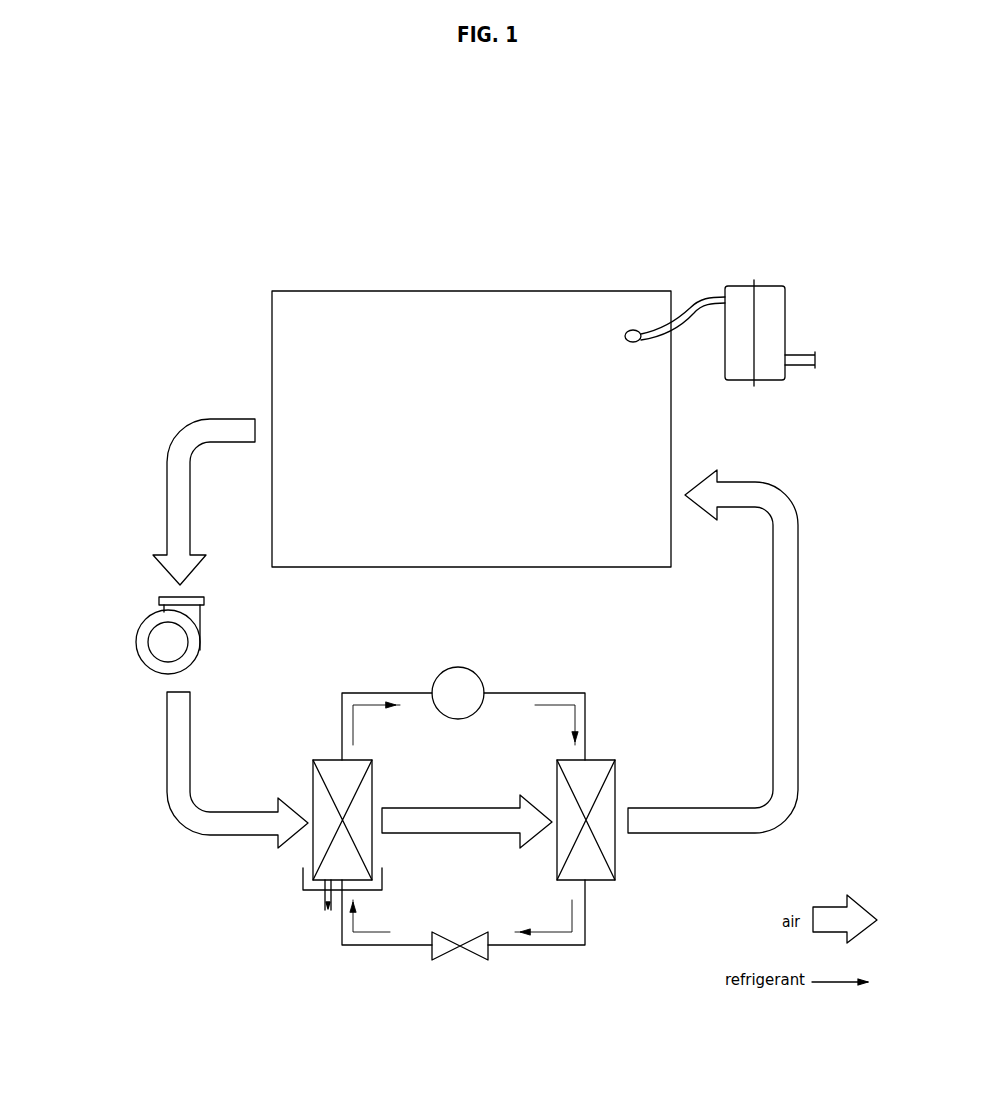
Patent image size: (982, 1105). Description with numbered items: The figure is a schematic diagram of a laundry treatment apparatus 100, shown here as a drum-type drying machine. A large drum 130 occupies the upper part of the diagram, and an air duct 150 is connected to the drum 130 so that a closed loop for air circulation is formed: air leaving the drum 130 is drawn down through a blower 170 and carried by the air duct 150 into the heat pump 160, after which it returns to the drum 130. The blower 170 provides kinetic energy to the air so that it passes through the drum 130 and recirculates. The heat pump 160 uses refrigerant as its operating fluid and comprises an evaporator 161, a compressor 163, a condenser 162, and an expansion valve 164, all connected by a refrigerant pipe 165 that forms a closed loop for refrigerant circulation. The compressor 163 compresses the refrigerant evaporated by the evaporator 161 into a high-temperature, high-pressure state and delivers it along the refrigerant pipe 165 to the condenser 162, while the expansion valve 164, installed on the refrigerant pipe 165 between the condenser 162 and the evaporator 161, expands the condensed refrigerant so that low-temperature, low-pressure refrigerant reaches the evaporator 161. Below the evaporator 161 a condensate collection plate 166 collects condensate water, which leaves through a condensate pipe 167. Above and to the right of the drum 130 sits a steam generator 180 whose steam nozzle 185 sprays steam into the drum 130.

The laundry treatment apparatus 100 is at (230, 227).
The drum 130 is at (519, 291).
The air duct 150 is at (167, 752).
The heat pump 160 is at (438, 824).
The evaporator 161 is at (322, 882).
The condenser 162 is at (598, 882).
The compressor 163 is at (457, 668).
The expansion valve 164 is at (437, 960).
The refrigerant pipe 165 is at (367, 947).
The condensate collection plate 166 is at (303, 878).
The condensate pipe 167 is at (329, 912).
The blower 170 is at (137, 640).
The steam generator 180 is at (771, 276).
The steam nozzle 185 is at (632, 330).